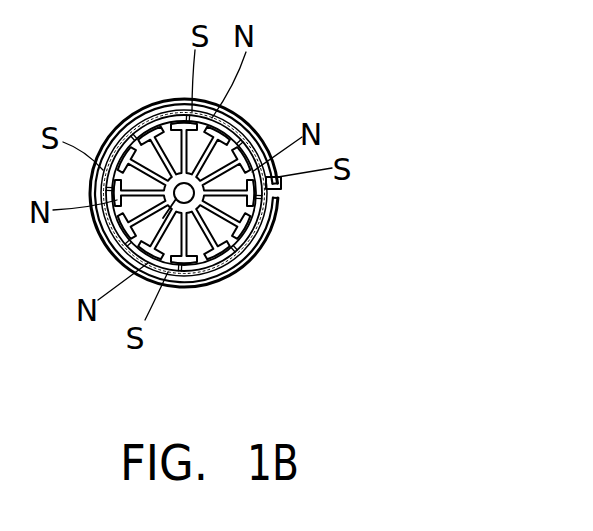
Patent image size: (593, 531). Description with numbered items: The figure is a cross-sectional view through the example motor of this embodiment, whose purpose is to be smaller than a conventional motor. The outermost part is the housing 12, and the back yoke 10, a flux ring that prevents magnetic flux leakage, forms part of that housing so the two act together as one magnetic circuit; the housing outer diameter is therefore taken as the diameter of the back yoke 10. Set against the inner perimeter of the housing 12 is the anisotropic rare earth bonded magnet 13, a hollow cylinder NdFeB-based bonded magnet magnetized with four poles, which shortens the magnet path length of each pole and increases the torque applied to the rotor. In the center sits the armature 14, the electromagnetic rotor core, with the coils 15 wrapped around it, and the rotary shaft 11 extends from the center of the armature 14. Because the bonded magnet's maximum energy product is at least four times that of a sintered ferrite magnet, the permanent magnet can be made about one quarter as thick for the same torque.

The back yoke 10 is at (180, 100).
The rotary shaft 11 is at (133, 248).
The housing 12 is at (273, 197).
The anisotropic rare earth bonded magnet 13 is at (238, 117).
The armature 14 is at (235, 265).
The coils 15 is at (202, 260).